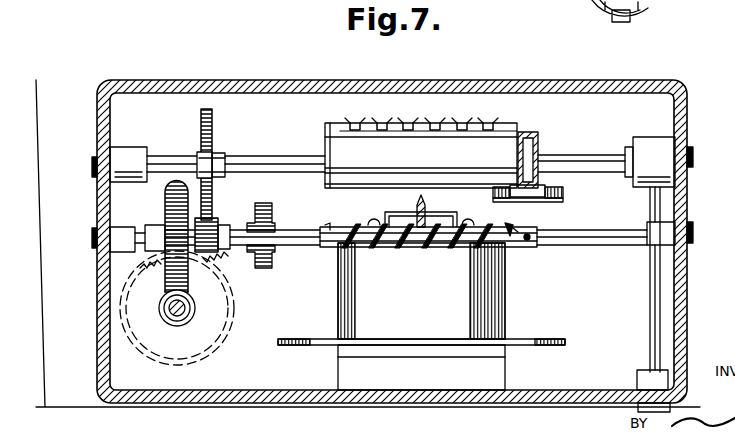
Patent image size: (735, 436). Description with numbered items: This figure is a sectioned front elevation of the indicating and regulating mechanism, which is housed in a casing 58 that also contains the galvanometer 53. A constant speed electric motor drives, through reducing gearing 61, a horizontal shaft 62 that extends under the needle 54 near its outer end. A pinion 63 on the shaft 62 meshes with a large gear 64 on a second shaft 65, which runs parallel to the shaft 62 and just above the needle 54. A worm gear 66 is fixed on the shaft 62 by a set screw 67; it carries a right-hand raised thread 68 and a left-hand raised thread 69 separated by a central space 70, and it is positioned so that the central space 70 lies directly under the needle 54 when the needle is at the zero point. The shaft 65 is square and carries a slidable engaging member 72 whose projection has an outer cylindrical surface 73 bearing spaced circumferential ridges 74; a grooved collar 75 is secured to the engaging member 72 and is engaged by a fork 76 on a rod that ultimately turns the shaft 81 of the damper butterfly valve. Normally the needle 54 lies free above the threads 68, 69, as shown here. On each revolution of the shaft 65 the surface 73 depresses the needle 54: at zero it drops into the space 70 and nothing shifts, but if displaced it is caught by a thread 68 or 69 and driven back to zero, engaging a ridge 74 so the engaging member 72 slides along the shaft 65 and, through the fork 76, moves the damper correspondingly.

The galvanometer 53 is at (505, 319).
The needle 54 is at (428, 205).
The casing 58 is at (262, 80).
The reducing gearing 61 is at (211, 288).
The horizontal shaft 62 is at (606, 247).
The pinion 63 is at (218, 218).
The large gear 64 is at (213, 133).
The shaft 65 is at (585, 163).
The worm gear 66 is at (513, 228).
The set screw 67 is at (529, 246).
The right-hand raised thread 68 is at (468, 248).
The left-hand raised thread 69 is at (390, 250).
The central space 70 is at (424, 250).
The engaging member 72 is at (493, 148).
The cylindrical surface 73 is at (453, 125).
The circumferential ridges 74 is at (430, 123).
The grooved collar 75 is at (533, 155).
The fork 76 is at (528, 133).
The shaft 81 is at (651, 288).